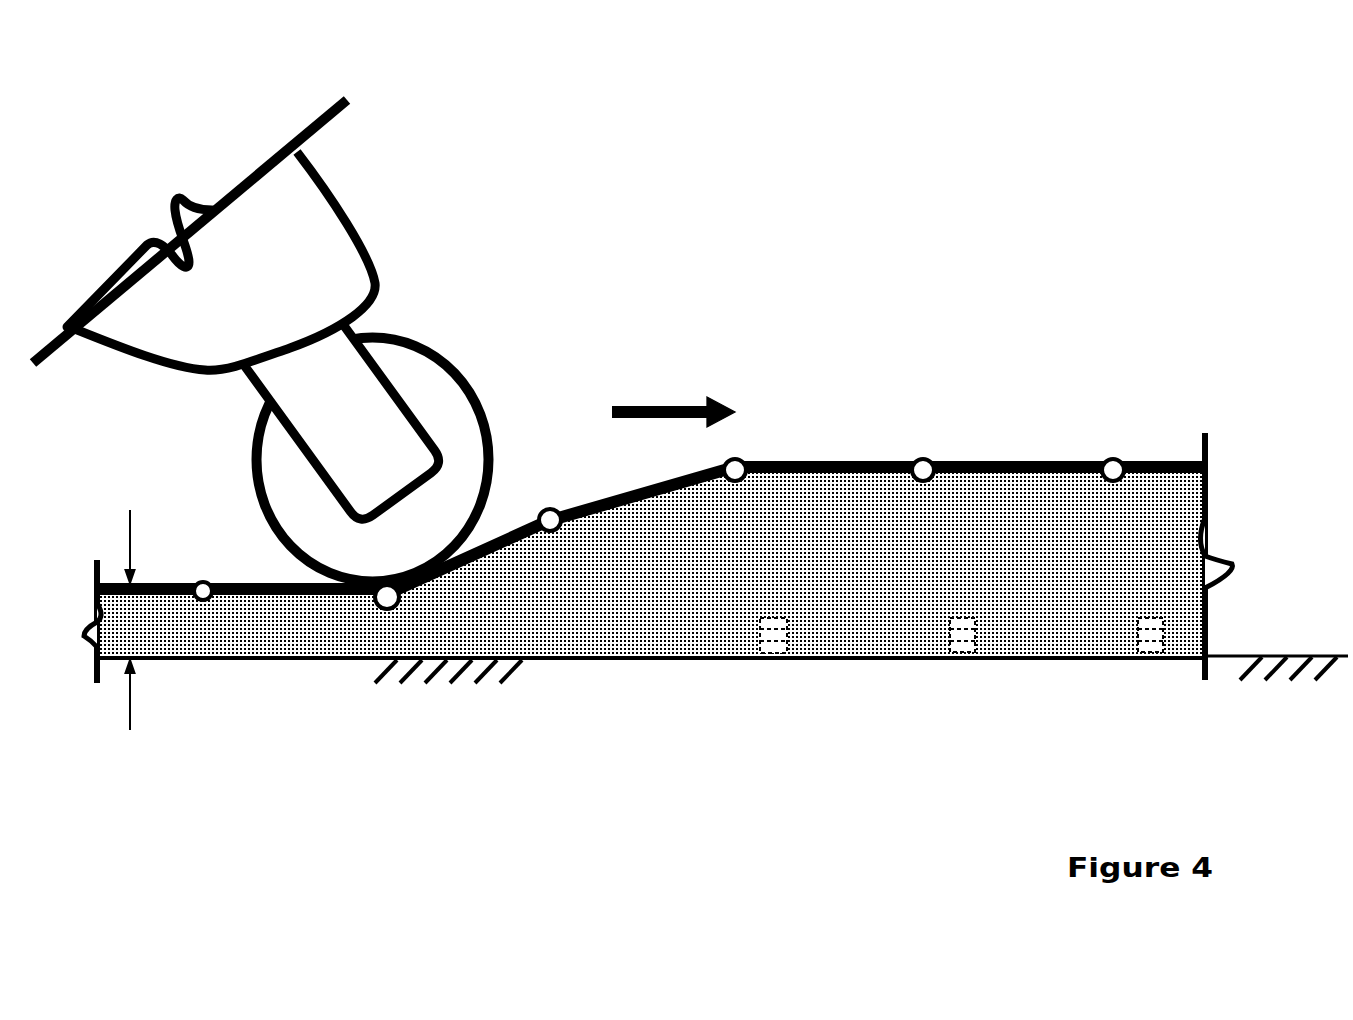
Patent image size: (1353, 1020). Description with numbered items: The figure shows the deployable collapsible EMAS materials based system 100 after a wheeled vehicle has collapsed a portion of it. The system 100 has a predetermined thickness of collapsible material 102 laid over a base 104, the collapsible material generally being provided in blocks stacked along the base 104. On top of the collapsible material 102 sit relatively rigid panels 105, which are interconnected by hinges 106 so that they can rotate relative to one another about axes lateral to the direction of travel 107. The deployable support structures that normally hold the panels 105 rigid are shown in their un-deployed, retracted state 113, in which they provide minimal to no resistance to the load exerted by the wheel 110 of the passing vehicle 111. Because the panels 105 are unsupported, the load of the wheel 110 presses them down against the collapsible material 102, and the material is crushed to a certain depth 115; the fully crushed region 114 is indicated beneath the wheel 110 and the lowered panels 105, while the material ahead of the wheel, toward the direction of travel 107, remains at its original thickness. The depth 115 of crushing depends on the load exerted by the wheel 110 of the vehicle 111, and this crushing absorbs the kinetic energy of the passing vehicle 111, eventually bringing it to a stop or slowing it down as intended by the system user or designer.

The collapsible material based system 100 is at (1172, 226).
The collapsible material 102 is at (681, 620).
The base 104 is at (1278, 637).
The rigid panels 105 is at (1070, 446).
The hinge 106 is at (944, 434).
The direction of travel 107 is at (673, 394).
The wheel 110 is at (484, 364).
The vehicle 111 is at (349, 188).
The un-deployed (retracted) state 113 is at (954, 654).
The fully crushed region 114 is at (258, 634).
The depth 115 is at (134, 643).